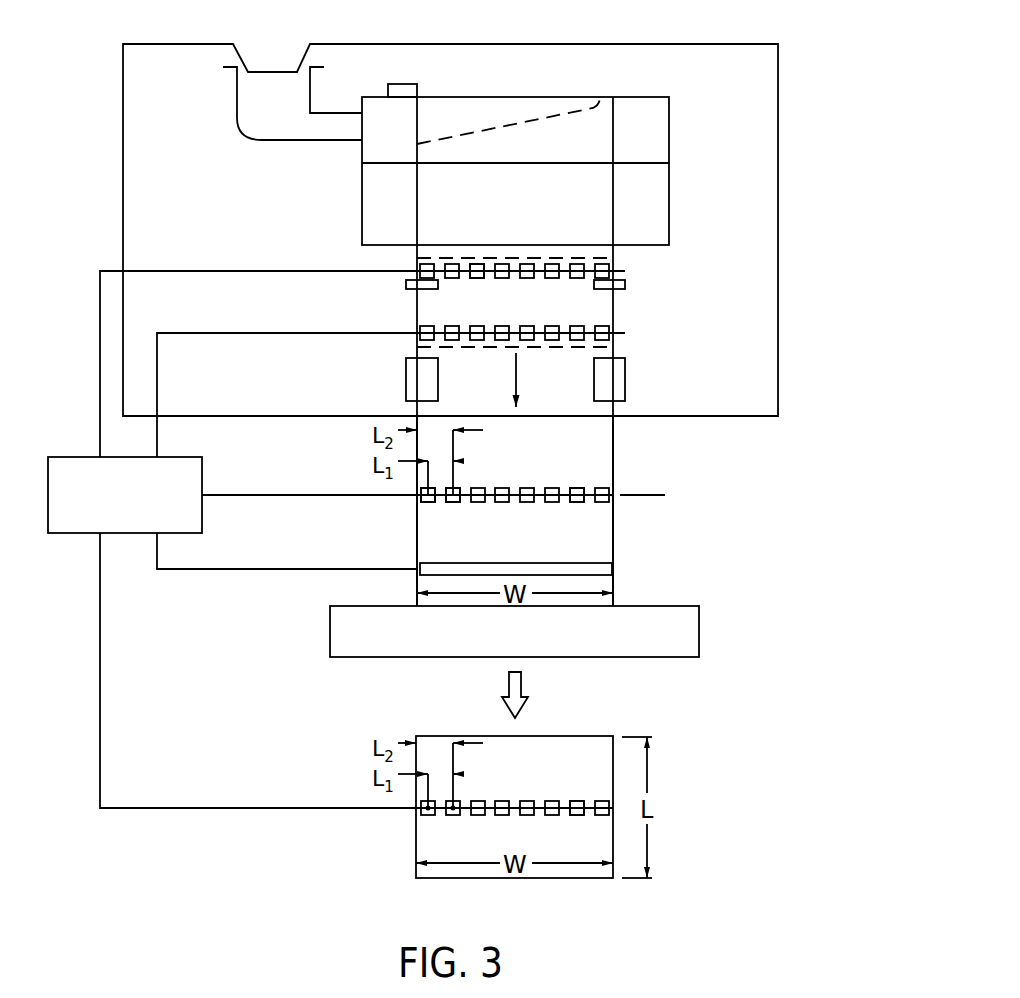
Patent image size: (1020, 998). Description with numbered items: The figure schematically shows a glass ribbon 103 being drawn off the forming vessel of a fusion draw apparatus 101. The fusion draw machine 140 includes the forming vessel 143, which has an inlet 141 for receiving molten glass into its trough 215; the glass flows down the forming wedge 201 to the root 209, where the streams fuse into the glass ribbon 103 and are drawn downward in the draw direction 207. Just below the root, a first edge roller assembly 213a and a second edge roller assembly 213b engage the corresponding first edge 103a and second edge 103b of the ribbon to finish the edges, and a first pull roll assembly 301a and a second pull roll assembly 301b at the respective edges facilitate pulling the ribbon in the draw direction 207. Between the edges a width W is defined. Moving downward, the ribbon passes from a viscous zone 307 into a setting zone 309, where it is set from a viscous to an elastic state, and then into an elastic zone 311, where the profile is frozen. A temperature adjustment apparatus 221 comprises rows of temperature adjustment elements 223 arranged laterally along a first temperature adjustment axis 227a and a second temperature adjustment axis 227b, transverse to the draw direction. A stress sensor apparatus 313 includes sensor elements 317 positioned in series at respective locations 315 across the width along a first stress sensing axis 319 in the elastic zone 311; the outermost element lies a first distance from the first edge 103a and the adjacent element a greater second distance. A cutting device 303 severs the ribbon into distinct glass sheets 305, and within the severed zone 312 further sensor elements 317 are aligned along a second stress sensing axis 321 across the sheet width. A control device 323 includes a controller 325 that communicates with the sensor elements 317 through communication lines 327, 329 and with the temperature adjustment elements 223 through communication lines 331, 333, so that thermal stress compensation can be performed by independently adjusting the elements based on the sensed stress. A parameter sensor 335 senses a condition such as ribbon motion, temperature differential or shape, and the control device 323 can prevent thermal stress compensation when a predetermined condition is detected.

The fusion draw apparatus 101 is at (516, 230).
The fusion draw machine 140 is at (778, 72).
The inlet 141 is at (237, 99).
The forming vessel 143 is at (682, 126).
The forming wedge 201 is at (519, 126).
The trough 215 is at (508, 125).
The glass ribbon 103 is at (607, 555).
The first edge 103a is at (417, 517).
The second edge 103b is at (613, 525).
The communication line 331 is at (188, 271).
The communication line 333 is at (218, 332).
The first temperature adjustment axis 227a is at (625, 271).
The second temperature adjustment axis 227b is at (625, 333).
The temperature adjustment elements 223 is at (478, 262).
The root 209 is at (512, 256).
The first edge roller assembly 213a is at (438, 286).
The second edge roller assembly 213b is at (594, 286).
The temperature adjustment apparatus 221 is at (712, 241).
The first pull roll assembly 301a is at (468, 382).
The second pull roll assembly 301b is at (625, 365).
The draw direction 207 is at (516, 365).
The viscous zone 307 is at (365, 245).
The setting zone 309 is at (365, 269).
The elastic zone 311 is at (365, 348).
The severed zone 312 is at (358, 662).
The controller 325 is at (66, 457).
The control device 323 is at (109, 556).
The communication line 327 is at (231, 495).
The communication line 329 is at (152, 808).
The stress sensor apparatus 313 is at (635, 634).
The respective locations 315 is at (428, 502).
The sensor elements 317 is at (577, 488).
The first stress sensing axis 319 is at (648, 495).
The parameter sensor 335 is at (607, 573).
The cutting device 303 is at (578, 622).
The glass sheets 305 is at (600, 738).
The second stress sensing axis 321 is at (392, 810).